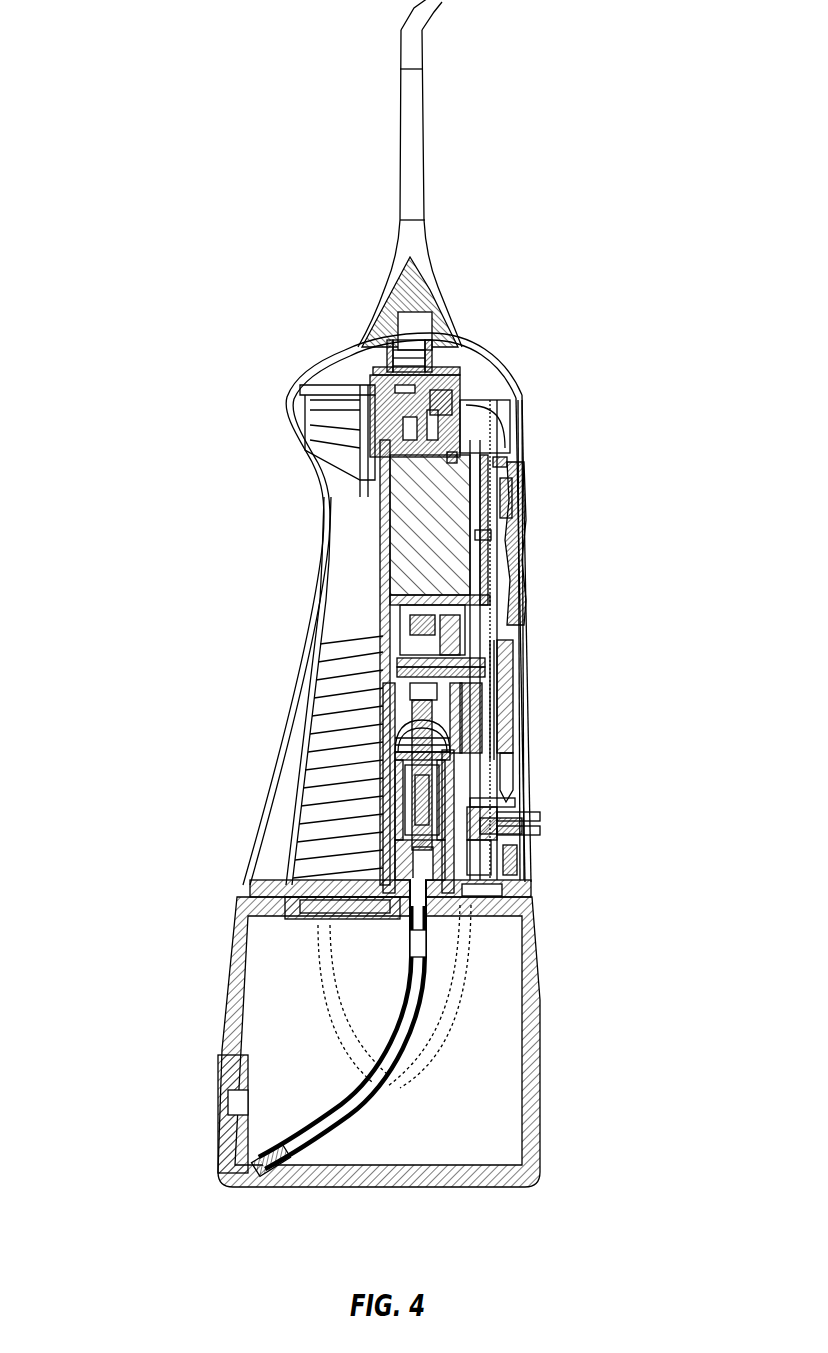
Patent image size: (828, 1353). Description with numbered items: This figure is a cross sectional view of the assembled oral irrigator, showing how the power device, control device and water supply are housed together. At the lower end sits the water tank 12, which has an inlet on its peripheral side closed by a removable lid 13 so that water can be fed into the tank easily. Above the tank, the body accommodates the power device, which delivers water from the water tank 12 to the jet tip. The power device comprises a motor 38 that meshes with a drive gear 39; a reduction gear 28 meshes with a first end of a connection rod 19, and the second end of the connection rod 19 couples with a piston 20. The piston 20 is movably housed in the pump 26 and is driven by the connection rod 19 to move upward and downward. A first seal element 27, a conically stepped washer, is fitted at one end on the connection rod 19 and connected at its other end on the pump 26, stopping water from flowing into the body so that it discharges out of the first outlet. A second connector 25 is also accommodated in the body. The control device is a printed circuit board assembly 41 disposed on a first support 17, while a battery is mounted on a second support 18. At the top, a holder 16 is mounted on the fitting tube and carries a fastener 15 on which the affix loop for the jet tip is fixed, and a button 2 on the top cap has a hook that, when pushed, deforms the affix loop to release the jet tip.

The button 2 is at (500, 375).
The water tank 12 is at (540, 992).
The lid 13 is at (218, 1100).
The fastener 15 is at (380, 374).
The holder 16 is at (335, 400).
The first support 17 is at (500, 500).
The second support 18 is at (378, 832).
The connection rod 19 is at (460, 750).
The piston 20 is at (525, 805).
The second connector 25 is at (522, 890).
The pump 26 is at (522, 843).
The first seal element 27 is at (385, 740).
The reduction gear 28 is at (455, 655).
The motor 38 is at (415, 525).
The drive gear 39 is at (412, 617).
The printed circuit board assembly (PCBA) 41 is at (505, 596).